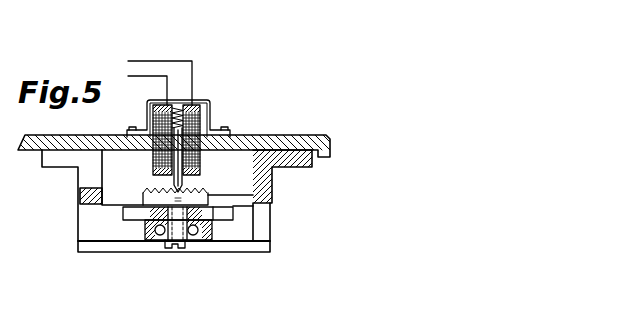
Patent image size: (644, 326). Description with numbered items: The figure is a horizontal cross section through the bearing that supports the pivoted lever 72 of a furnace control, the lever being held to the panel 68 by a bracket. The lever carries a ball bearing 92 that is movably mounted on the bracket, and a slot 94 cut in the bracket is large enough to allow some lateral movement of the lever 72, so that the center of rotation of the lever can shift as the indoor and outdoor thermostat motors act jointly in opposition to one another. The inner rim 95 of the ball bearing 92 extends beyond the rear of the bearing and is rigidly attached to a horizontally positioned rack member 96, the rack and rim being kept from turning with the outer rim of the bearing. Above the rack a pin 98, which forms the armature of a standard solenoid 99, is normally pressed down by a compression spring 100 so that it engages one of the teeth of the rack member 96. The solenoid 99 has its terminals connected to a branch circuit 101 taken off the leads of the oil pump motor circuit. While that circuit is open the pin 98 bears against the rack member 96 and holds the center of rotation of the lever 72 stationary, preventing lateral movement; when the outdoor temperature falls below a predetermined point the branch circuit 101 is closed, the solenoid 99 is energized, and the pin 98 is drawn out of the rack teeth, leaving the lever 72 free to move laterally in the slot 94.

The panel 68 is at (327, 140).
The pivoted lever 72 is at (208, 212).
The ball bearing 92 is at (147, 237).
The slot 94 is at (233, 218).
The inner rim 95 is at (194, 236).
The rack member 96 is at (147, 197).
The pin 98 is at (202, 181).
The solenoid 99 is at (200, 117).
The compression spring 100 is at (203, 99).
The branch circuit 101 is at (141, 67).